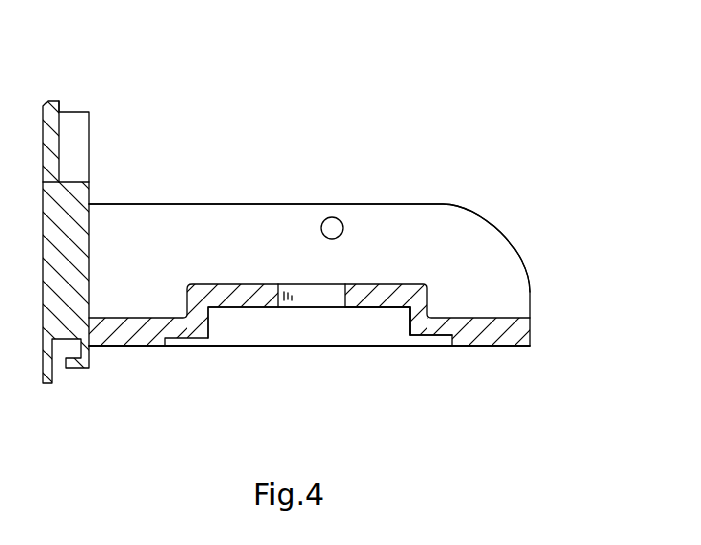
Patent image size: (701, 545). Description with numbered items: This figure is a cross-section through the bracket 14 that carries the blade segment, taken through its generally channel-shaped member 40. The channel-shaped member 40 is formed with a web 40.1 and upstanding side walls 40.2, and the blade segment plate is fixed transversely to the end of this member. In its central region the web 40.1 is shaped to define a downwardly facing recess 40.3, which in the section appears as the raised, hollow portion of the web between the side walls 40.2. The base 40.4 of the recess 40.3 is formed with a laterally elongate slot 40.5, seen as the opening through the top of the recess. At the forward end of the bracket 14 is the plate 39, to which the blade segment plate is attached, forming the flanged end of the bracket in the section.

The bracket 14 is at (303, 190).
The plate 39 is at (92, 232).
The channel-shaped member 40 is at (137, 348).
The web 40.1 is at (142, 347).
The side walls 40.2 is at (422, 222).
The recess 40.3 is at (358, 324).
The base of the recess 40.4 is at (380, 310).
The slot 40.5 is at (345, 290).